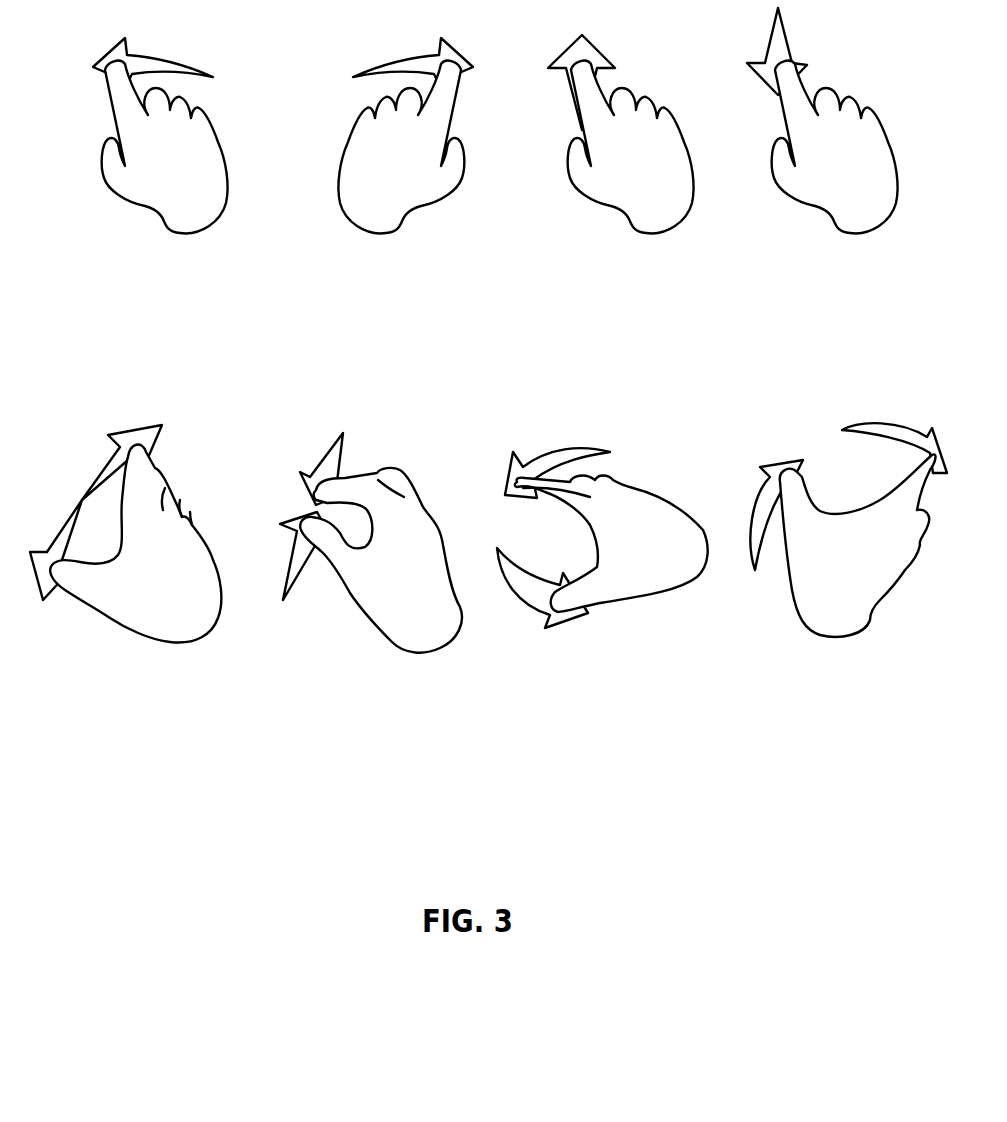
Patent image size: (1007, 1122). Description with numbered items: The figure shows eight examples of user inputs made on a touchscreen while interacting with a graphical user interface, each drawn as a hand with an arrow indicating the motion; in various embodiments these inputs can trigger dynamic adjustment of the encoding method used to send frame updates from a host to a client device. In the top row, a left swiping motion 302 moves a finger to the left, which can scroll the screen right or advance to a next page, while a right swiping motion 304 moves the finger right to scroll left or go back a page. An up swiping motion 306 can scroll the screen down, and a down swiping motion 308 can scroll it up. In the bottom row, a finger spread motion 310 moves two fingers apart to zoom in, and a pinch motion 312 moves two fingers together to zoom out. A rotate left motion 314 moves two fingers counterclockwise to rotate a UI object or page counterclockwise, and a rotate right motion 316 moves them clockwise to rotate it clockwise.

The left swiping motion 302 is at (160, 169).
The right swiping motion 304 is at (405, 169).
The up swiping motion 306 is at (621, 168).
The down swiping motion 308 is at (822, 154).
The finger spread motion 310 is at (125, 571).
The pinch motion 312 is at (371, 575).
The rotate left motion 314 is at (602, 583).
The rotate right motion 316 is at (848, 570).